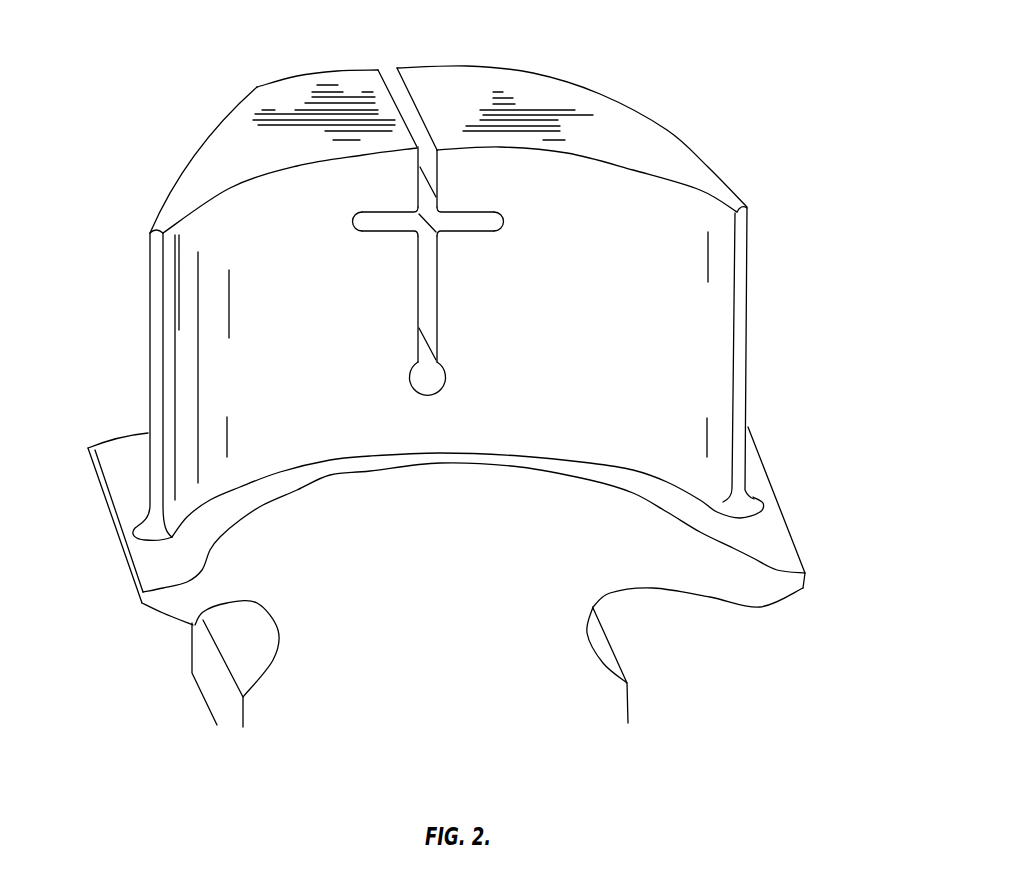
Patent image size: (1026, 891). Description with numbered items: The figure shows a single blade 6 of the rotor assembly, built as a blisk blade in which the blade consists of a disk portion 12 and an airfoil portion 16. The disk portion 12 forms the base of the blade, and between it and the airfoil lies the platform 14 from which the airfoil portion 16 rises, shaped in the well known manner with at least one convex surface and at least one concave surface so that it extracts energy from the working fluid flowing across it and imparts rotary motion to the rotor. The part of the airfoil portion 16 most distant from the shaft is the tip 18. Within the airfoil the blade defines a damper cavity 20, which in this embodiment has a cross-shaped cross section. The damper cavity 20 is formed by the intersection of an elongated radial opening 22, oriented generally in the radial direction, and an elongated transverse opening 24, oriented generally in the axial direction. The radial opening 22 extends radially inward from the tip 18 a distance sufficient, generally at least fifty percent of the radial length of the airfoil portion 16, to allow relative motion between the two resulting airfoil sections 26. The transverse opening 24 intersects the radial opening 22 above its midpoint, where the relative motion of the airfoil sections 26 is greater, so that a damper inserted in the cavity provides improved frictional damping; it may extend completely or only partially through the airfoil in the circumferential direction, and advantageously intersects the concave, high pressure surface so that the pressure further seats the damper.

The blade 6 is at (174, 128).
The disk portion 12 is at (333, 650).
The platform 14 is at (122, 483).
The airfoil portion 16 is at (312, 333).
The tip 18 is at (312, 142).
The damper cavity 20 is at (408, 120).
The elongated radial opening 22 is at (427, 297).
The elongated transverse opening 24 is at (494, 207).
The airfoil sections 26 is at (243, 270).